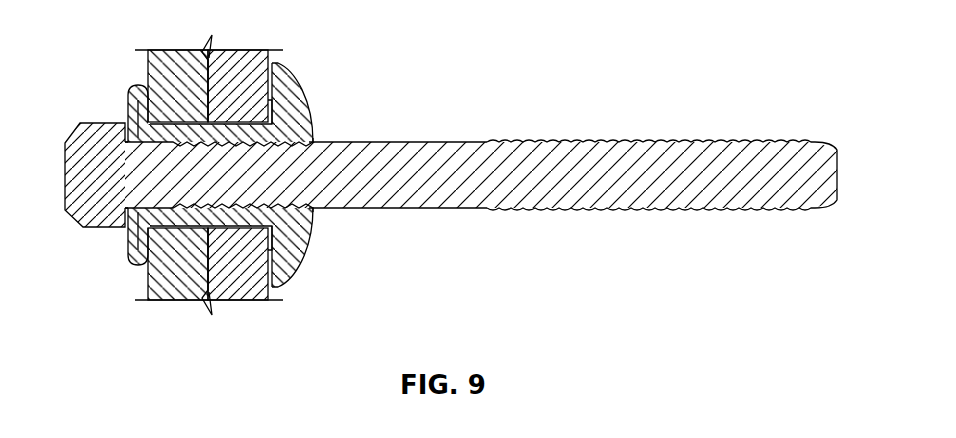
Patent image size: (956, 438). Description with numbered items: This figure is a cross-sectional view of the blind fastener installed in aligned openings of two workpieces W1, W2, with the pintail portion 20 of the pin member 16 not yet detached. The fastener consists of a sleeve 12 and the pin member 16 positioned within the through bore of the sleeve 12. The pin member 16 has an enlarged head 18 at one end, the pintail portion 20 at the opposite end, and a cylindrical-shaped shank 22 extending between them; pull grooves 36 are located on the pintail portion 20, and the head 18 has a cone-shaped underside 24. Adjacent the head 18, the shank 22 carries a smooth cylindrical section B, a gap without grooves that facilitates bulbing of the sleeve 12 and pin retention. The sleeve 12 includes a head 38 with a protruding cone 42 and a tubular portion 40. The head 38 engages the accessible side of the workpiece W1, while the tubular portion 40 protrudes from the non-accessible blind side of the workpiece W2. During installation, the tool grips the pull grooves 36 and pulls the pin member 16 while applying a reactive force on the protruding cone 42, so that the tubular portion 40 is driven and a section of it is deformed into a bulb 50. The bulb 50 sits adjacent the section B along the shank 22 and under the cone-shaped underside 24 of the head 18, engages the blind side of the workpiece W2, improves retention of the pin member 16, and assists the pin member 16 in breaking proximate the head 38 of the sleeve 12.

The sleeve 12 is at (326, 229).
The pin member 16 is at (473, 132).
The head 18 is at (65, 180).
The pintail portion 20 is at (835, 147).
The shank 22 is at (295, 272).
The cone-shaped underside 24 is at (118, 136).
The pull grooves 36 is at (668, 141).
The head 38 is at (312, 133).
The tubular portion 40 is at (163, 128).
The protruding cone 42 is at (315, 139).
The bulb 50 is at (133, 85).
The smooth cylindrical section B is at (137, 213).
The workpiece W1 is at (243, 58).
The workpiece W2 is at (178, 57).